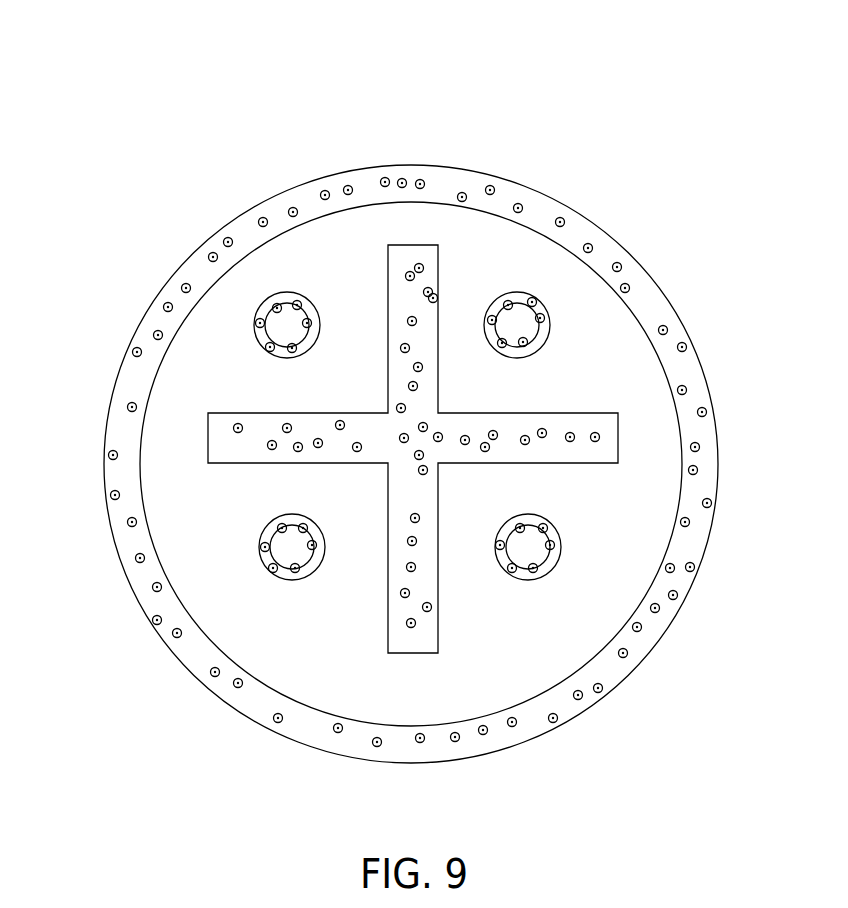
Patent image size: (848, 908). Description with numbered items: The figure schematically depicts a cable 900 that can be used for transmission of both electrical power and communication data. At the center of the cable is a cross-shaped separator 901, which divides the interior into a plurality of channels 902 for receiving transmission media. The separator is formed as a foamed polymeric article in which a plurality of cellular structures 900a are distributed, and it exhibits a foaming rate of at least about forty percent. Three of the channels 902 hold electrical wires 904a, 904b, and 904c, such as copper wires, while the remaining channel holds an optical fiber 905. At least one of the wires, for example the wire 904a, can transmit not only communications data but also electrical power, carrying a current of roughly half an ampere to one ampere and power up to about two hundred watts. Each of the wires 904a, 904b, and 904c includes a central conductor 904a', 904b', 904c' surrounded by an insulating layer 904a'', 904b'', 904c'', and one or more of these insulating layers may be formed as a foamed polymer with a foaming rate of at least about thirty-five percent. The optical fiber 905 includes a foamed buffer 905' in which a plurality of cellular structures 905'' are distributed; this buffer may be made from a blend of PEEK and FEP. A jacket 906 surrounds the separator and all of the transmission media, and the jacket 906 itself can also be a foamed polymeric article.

The cable 900 is at (98, 96).
The cellular structures 900a is at (426, 293).
The cross-shaped separator 901 is at (441, 295).
The channels 902 is at (222, 335).
The electrical wire 904a is at (301, 293).
The central conductor 904a' is at (314, 363).
The insulating layer 904a'' is at (241, 363).
The electrical wire 904b is at (499, 352).
The central conductor 904b' is at (546, 374).
The insulating layer 904b'' is at (501, 266).
The electrical wire 904c is at (304, 584).
The central conductor 904c' is at (318, 510).
The insulating layer 904c'' is at (219, 563).
The optical fiber 905 is at (523, 586).
The foamed buffer 905' is at (572, 570).
The cellular structures 905'' is at (485, 509).
The jacket 906 is at (165, 290).